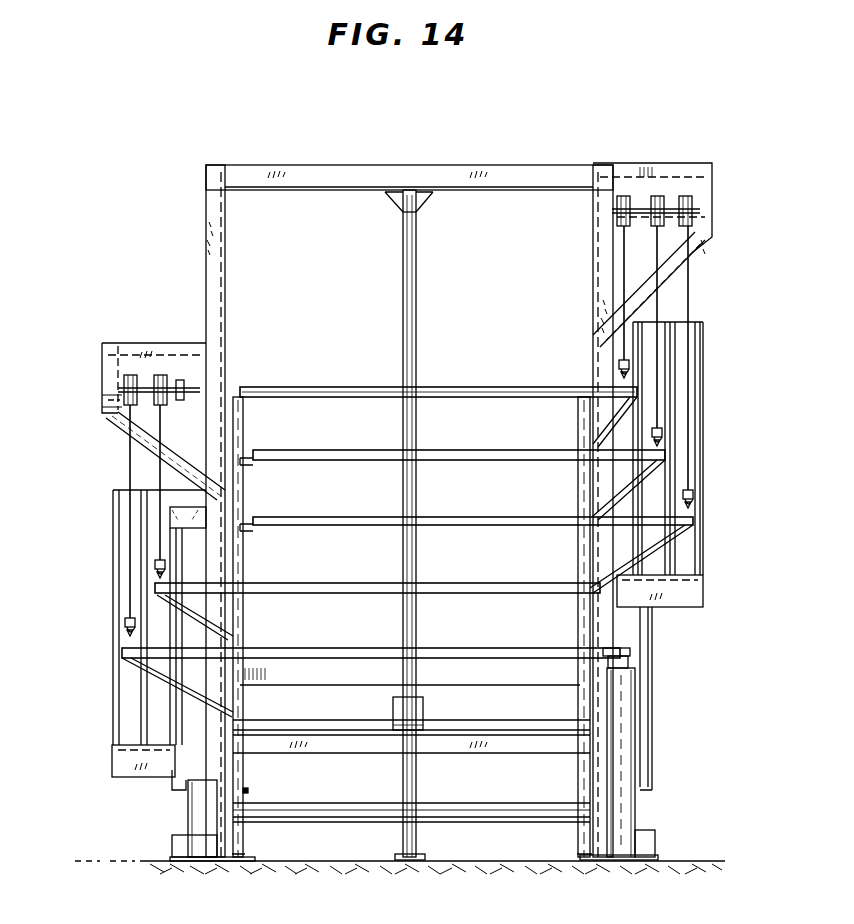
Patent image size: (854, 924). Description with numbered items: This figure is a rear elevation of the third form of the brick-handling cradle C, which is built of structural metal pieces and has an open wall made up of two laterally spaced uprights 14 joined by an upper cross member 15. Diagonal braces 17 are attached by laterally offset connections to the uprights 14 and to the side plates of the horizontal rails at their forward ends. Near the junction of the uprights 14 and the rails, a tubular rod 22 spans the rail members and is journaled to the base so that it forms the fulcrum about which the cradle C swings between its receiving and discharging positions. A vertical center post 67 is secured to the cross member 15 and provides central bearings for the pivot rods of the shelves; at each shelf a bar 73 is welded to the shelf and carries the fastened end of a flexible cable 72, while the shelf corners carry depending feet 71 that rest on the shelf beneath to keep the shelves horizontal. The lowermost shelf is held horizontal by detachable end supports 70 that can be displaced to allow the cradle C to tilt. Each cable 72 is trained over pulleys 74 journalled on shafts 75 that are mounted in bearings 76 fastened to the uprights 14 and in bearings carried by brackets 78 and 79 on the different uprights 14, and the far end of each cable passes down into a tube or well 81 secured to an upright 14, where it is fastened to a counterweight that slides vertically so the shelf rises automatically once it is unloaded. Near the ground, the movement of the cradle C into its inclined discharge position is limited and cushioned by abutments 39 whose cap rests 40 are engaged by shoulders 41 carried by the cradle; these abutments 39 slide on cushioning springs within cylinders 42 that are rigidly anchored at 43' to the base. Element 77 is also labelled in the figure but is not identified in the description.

The cradle C is at (200, 240).
The uprights 14 is at (216, 263).
The upper cross member 15 is at (460, 178).
The diagonal braces 17 is at (180, 722).
The tubular rod 22 is at (356, 818).
The abutments 39 is at (245, 667).
The cap rests 40 is at (630, 652).
The shoulders 41 is at (190, 507).
The cylinders 42 is at (205, 812).
The anchorage 43' is at (403, 843).
The center post 67 is at (403, 293).
The end supports 70 is at (240, 782).
The depending feet 71 is at (242, 430).
The flexible cable 72 is at (126, 468).
The bar 73 is at (524, 392).
The pulleys 74 is at (155, 375).
The shafts 75 is at (180, 382).
The bearings 76 is at (222, 380).
The mounting bracket 77 is at (115, 387).
The bracket 78 is at (104, 348).
The bracket 79 is at (692, 262).
The tubes or wells 81 is at (155, 718).